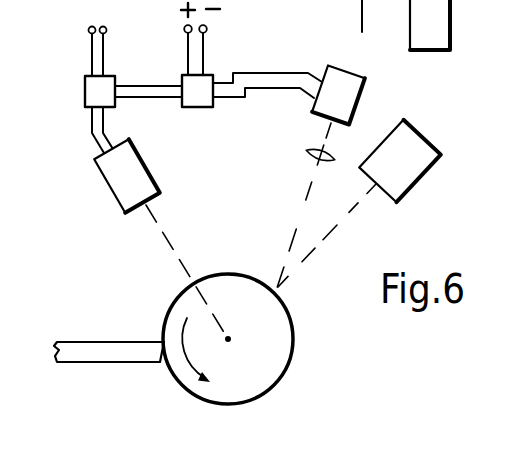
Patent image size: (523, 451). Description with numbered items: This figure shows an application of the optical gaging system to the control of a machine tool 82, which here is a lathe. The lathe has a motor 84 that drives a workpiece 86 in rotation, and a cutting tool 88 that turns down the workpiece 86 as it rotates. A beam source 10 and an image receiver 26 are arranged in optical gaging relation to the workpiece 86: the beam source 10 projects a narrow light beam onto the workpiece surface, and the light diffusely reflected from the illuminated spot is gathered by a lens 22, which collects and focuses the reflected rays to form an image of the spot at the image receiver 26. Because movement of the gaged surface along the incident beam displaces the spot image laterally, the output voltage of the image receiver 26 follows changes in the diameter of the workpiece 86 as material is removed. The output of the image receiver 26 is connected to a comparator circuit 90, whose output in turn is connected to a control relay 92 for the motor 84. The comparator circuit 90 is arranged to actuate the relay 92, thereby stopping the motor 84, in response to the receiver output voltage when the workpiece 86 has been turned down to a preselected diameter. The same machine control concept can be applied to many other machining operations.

The beam source 10 is at (387, 175).
The lens 22 is at (305, 152).
The image receiver 26 is at (352, 116).
The machine tool 82 is at (300, 311).
The motor 84 is at (141, 183).
The workpiece 86 is at (228, 339).
The cutting tool 88 is at (115, 350).
The comparator circuit 90 is at (214, 86).
The control relay 92 is at (84, 85).